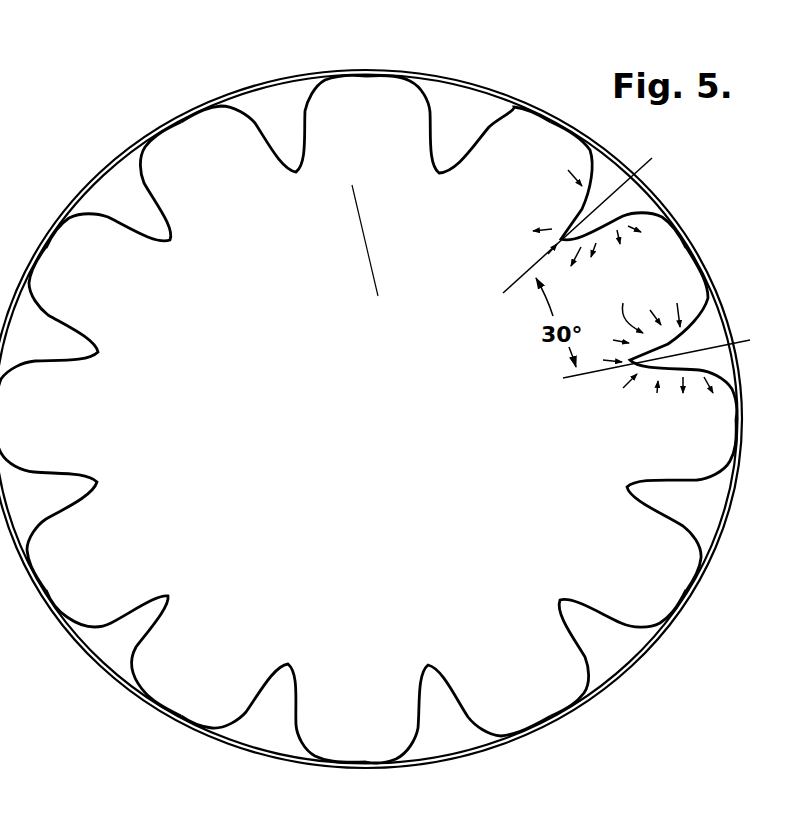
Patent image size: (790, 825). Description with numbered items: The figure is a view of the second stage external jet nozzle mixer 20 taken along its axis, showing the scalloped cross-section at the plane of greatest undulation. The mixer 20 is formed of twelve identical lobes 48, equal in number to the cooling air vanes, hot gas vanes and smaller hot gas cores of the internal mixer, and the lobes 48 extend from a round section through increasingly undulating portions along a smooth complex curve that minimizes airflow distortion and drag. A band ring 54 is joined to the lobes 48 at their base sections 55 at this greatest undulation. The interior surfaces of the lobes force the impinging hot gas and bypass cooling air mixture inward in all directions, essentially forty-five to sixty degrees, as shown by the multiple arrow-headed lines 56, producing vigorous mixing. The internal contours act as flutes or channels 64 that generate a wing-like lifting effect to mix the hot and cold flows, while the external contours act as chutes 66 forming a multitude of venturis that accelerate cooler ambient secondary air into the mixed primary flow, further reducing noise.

The second stage external jet nozzle mixer 20 is at (371, 400).
The band ring 54 is at (472, 74).
The base sections 55 is at (366, 78).
The multiple arrow-headed lines 56 is at (562, 208).
The flutes or channels 64 is at (131, 215).
The chutes 66 is at (368, 389).
The lobes 48 is at (175, 250).